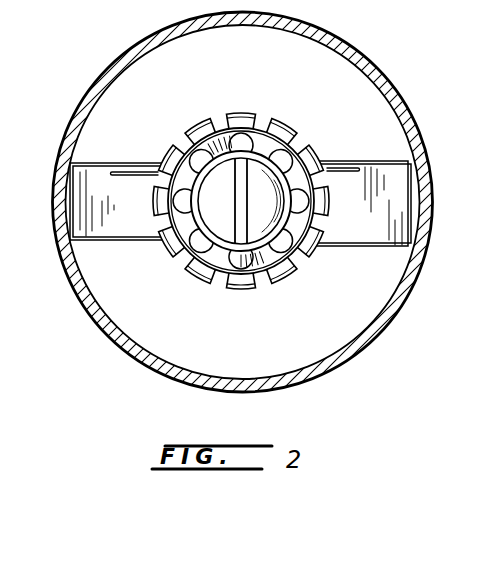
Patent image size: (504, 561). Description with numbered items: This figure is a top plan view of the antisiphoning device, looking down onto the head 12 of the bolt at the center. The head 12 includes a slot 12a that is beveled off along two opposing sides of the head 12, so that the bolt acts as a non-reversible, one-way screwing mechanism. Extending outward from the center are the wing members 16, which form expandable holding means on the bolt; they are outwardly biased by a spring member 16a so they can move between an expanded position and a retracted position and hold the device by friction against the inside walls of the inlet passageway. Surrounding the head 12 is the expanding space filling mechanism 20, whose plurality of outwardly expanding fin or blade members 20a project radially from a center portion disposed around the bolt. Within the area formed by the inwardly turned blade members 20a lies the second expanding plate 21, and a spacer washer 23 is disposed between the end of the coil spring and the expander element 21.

The head 12 is at (208, 242).
The slot 12a is at (243, 247).
The wing members 16 is at (391, 209).
The spring member 16a is at (338, 165).
The space filling mechanism 20 is at (248, 104).
The fin or blade members 20a is at (281, 127).
The second expanding plate 21 is at (288, 156).
The spacer washer 23 is at (279, 244).